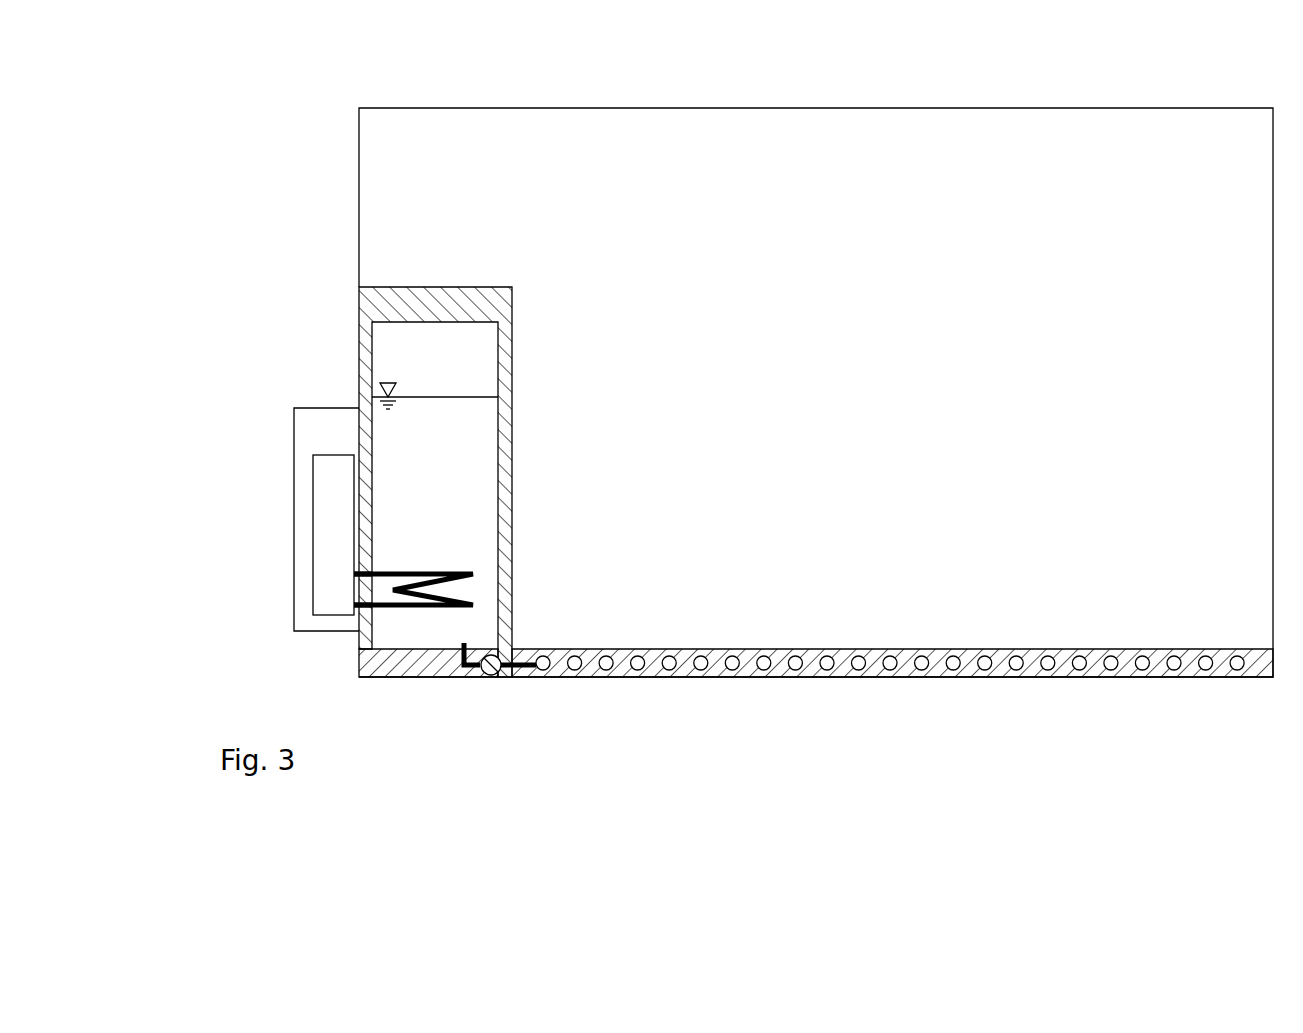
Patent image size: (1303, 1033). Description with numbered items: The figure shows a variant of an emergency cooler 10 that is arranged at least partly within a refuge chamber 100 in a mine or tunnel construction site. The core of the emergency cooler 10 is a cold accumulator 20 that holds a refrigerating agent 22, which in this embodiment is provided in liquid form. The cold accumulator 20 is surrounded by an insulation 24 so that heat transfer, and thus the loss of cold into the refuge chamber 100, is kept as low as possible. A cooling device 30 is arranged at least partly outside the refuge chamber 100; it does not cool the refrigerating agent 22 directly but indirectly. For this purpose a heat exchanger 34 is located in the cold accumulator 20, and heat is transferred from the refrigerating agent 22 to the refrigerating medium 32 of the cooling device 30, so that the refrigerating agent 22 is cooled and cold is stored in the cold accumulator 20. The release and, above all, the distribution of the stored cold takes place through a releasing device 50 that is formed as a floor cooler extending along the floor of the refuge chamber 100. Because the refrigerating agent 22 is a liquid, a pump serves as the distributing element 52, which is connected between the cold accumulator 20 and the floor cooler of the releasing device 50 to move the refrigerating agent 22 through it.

The refuge chamber 100 is at (428, 108).
The emergency cooler 10 is at (296, 347).
The cold accumulator 20 is at (482, 482).
The refrigerating agent 22 is at (474, 477).
The insulation 24 is at (505, 560).
The cooling device 30 is at (305, 520).
The refrigerating medium 32 is at (395, 608).
The heat exchanger 34 is at (470, 589).
The releasing device 50 is at (842, 649).
The distributing element 52 is at (488, 677).